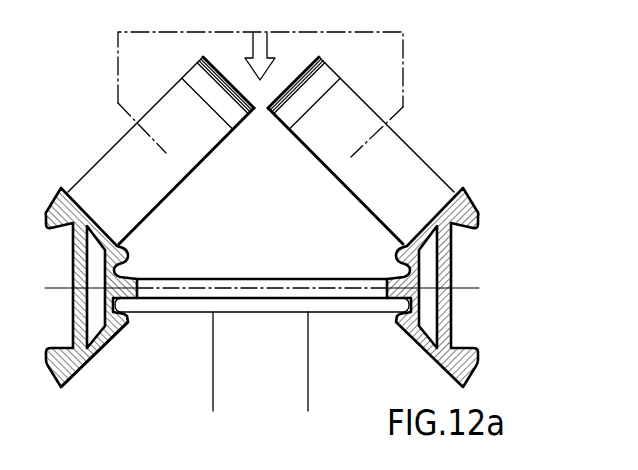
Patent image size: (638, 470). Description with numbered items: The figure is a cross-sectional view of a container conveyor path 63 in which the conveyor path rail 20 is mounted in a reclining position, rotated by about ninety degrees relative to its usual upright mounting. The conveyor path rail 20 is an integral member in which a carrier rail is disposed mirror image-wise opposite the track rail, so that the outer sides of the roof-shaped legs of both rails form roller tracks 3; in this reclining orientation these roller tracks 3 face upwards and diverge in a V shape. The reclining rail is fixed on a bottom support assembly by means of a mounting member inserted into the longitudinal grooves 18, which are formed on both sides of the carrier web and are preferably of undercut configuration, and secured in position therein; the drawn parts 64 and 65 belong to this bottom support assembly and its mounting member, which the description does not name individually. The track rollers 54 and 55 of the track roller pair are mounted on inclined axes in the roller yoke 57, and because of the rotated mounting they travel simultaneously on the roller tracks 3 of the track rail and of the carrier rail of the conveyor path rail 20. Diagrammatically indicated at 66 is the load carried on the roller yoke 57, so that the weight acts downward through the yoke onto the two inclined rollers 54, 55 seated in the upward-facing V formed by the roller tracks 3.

The roller tracks 3 is at (96, 214).
The longitudinal grooves 18 is at (118, 307).
The conveyor path rail 20 is at (126, 352).
The track roller 54 is at (132, 155).
The track roller 55 is at (415, 175).
The roller yoke 57 is at (403, 82).
The container conveyor path 63 is at (505, 192).
The support 64 is at (280, 368).
The panel 65 is at (187, 302).
The load 66 is at (262, 50).